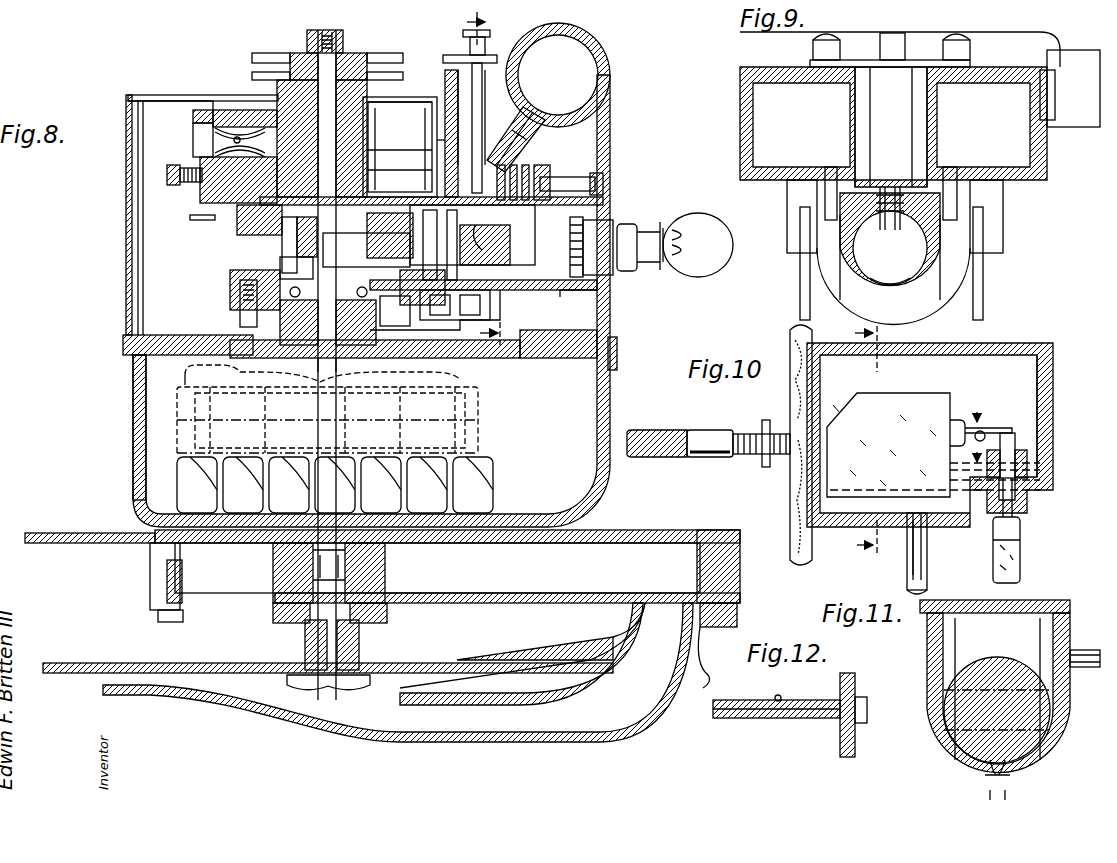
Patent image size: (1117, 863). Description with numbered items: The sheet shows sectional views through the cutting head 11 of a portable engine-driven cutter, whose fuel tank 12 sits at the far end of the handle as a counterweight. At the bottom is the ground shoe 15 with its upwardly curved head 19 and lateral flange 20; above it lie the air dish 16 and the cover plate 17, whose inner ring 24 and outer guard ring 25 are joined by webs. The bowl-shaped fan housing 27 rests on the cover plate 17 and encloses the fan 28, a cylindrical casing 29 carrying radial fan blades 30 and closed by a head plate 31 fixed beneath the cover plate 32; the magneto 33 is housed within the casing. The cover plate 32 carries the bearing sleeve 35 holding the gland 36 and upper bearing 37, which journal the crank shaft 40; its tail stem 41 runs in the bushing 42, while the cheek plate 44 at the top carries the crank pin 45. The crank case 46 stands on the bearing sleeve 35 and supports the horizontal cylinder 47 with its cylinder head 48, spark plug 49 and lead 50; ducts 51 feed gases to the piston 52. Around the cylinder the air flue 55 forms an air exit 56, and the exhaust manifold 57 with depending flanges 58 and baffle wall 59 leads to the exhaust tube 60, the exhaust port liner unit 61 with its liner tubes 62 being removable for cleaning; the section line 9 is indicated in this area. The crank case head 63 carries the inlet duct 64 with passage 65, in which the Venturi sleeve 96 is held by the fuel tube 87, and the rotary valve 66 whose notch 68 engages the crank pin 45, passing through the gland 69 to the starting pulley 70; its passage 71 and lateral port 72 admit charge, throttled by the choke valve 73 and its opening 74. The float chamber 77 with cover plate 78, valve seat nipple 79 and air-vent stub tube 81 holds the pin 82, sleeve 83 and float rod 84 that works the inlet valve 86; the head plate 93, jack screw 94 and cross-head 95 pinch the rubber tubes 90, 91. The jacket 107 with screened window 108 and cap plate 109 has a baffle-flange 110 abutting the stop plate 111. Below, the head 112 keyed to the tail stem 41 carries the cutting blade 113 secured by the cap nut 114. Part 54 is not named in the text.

In FIG. 8, the section line 9— 9 is at (474, 183).
In FIG. 10, the cutting head 11 is at (857, 441).
In FIG. 10, the fuel tank 12 is at (965, 434).
In FIG. 8, the ground shoe 15 is at (463, 742).
In FIG. 8, the air dish 16 is at (638, 612).
In FIG. 8, the cover plate 17 is at (628, 530).
In FIG. 8, the head 19 is at (660, 680).
In FIG. 8, the lateral flange 20 is at (740, 606).
In FIG. 8, the inner ring 24 is at (150, 550).
In FIG. 8, the outer guard ring 25 is at (50, 532).
In FIG. 8, the fan housing 27 is at (133, 461).
In FIG. 8, the fan 28 is at (173, 433).
In FIG. 8, the cylindrical casing 29 is at (477, 427).
In FIG. 8, the radial fan blades 30 is at (475, 499).
In FIG. 8, the head plate 31 is at (200, 374).
In FIG. 8, the cover plate 32 is at (125, 345).
In FIG. 8, the magneto 33 is at (360, 250).
In FIG. 8, the bearing sleeve 35 is at (243, 310).
In FIG. 8, the gland 36 is at (483, 311).
In FIG. 8, the upper bearing 37 is at (337, 307).
In FIG. 8, the crank shaft 40 is at (327, 355).
In FIG. 8, the tail stem 41 is at (372, 574).
In FIG. 8, the bushing 42 is at (283, 570).
In FIG. 8, the cheek plate 44 is at (283, 268).
In FIG. 8, the crank pin 45 is at (285, 245).
In FIG. 8, the crank case 46 is at (238, 182).
In FIG. 8, the cylinder 47 is at (520, 203).
In FIG. 9, the cylinder 47 is at (870, 272).
In FIG. 8, the cylinder head 48 is at (603, 180).
In FIG. 8, the spark plug 49 is at (627, 217).
In FIG. 8, the lead 50 is at (700, 214).
In FIG. 8, the ducts 51 is at (434, 311).
In FIG. 9, the ducts 51 is at (930, 308).
In FIG. 8, the piston 52 is at (431, 151).
In FIG. 8, the casing 54 is at (605, 400).
In FIG. 8, the air flue 55 is at (610, 330).
In FIG. 9, the air flue 55 is at (985, 300).
In FIG. 8, the air exit 56 is at (610, 306).
In FIG. 8, the exhaust manifold 57 is at (610, 60).
In FIG. 9, the exhaust manifold 57 is at (1040, 175).
In FIG. 9, the depending flanges 58 is at (992, 220).
In FIG. 8, the baffle wall 59 is at (510, 130).
In FIG. 9, the exhaust tube 60 is at (1075, 112).
In FIG. 10, the exhaust tube 60 is at (927, 551).
In FIG. 8, the exhaust port liner unit 61 is at (447, 60).
In FIG. 9, the exhaust port liner unit 61 is at (930, 140).
In FIG. 8, the exhaust port liner tubes 62 is at (486, 225).
In FIG. 9, the exhaust port liner tubes 62 is at (900, 187).
In FIG. 10, the exhaust port liner tubes 62 is at (985, 430).
In FIG. 8, the head 63 is at (402, 149).
In FIG. 10, the head 63 is at (950, 427).
In FIG. 8, the inlet duct 64 is at (205, 110).
In FIG. 8, the air inlet passage 65 is at (200, 137).
In FIG. 10, the air inlet passage 65 is at (905, 400).
In FIG. 11, the air inlet passage 65 is at (995, 657).
In FIG. 8, the valve 66 is at (388, 149).
In FIG. 8, the notch 68 is at (215, 217).
In FIG. 8, the gland 69 is at (400, 108).
In FIG. 8, the starting pulley 70 is at (387, 57).
In FIG. 8, the passage 71 is at (400, 155).
In FIG. 8, the lateral port 72 is at (400, 170).
In FIG. 8, the choke valve 73 is at (195, 200).
In FIG. 8, the opening 74 is at (195, 152).
In FIG. 10, the float chamber 77 is at (1050, 400).
In FIG. 11, the float chamber 77 is at (937, 725).
In FIG. 10, the cover plate 78 is at (1050, 347).
In FIG. 11, the cover plate 78 is at (1060, 600).
In FIG. 10, the valve seat nipple 79 is at (1025, 505).
In FIG. 11, the air-vent stub tube 81 is at (1090, 652).
In FIG. 12, the pin 82 is at (745, 700).
In FIG. 12, the sleeve 83 is at (808, 700).
In FIG. 10, the float rod 84 is at (1005, 427).
In FIG. 12, the float rod 84 is at (778, 702).
In FIG. 10, the inlet valve 86 is at (1027, 457).
In FIG. 8, the fuel tube 87 is at (237, 145).
In FIG. 10, the flexible rubber tube 90 is at (1017, 556).
In FIG. 10, the flexible rubber tube 91 is at (795, 540).
In FIG. 10, the head plate 93 is at (765, 423).
In FIG. 10, the jack screw 94 is at (675, 419).
In FIG. 10, the cross-head 95 is at (790, 464).
In FIG. 8, the Venturi sleeve 96 is at (340, 146).
In FIG. 8, the jacket 107 is at (140, 312).
In FIG. 8, the screened window 108 is at (126, 240).
In FIG. 8, the cap plate 109 is at (226, 97).
In FIG. 8, the baffle-flange 110 is at (422, 155).
In FIG. 8, the stop plate 111 is at (435, 336).
In FIG. 8, the head 112 is at (388, 638).
In FIG. 8, the cutting blade 113 is at (252, 663).
In FIG. 8, the cap nut 114 is at (362, 683).